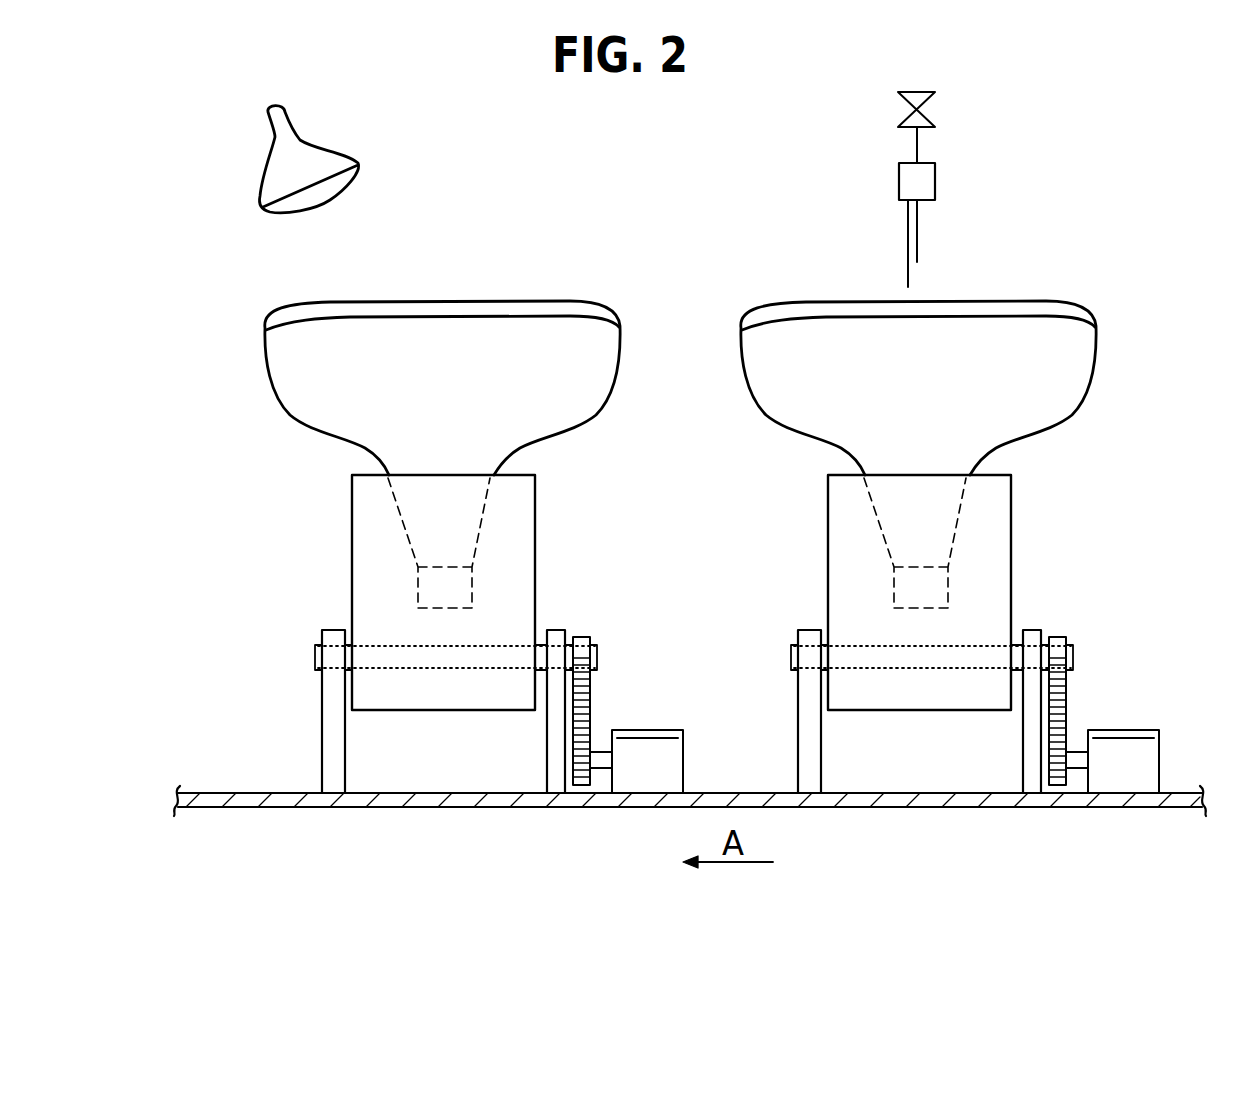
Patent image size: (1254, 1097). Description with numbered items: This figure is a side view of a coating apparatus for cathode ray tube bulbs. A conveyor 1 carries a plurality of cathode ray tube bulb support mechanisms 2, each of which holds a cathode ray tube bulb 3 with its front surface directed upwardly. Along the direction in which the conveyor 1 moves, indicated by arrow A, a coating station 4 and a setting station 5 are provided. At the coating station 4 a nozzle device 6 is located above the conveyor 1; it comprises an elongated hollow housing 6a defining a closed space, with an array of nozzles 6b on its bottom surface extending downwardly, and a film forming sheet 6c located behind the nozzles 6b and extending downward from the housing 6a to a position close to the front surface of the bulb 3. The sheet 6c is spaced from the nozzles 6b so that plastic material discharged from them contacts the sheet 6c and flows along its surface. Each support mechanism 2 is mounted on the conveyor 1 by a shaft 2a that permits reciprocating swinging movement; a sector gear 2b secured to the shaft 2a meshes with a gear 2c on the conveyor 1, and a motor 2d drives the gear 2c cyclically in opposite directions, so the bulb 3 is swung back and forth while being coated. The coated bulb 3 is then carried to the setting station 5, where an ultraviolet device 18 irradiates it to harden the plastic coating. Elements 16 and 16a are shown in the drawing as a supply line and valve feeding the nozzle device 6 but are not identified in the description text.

The conveyor 1 is at (272, 800).
The cathode ray tube bulb support mechanism 2 is at (372, 530).
The shaft 2a is at (597, 650).
The sector gear 2b is at (590, 690).
The gear 2c is at (590, 738).
The motor 2d is at (668, 770).
The cathode ray tube bulb 3 is at (295, 378).
The coating station 4 is at (1136, 303).
The setting station 5 is at (187, 206).
The nozzle device 6 is at (925, 183).
The hollow housing 6a is at (908, 180).
The nozzles 6b is at (917, 233).
The film forming sheet 6c is at (908, 253).
The supply pipe 16 is at (917, 145).
The valve 16a is at (935, 103).
The ultraviolet device 18 is at (323, 153).